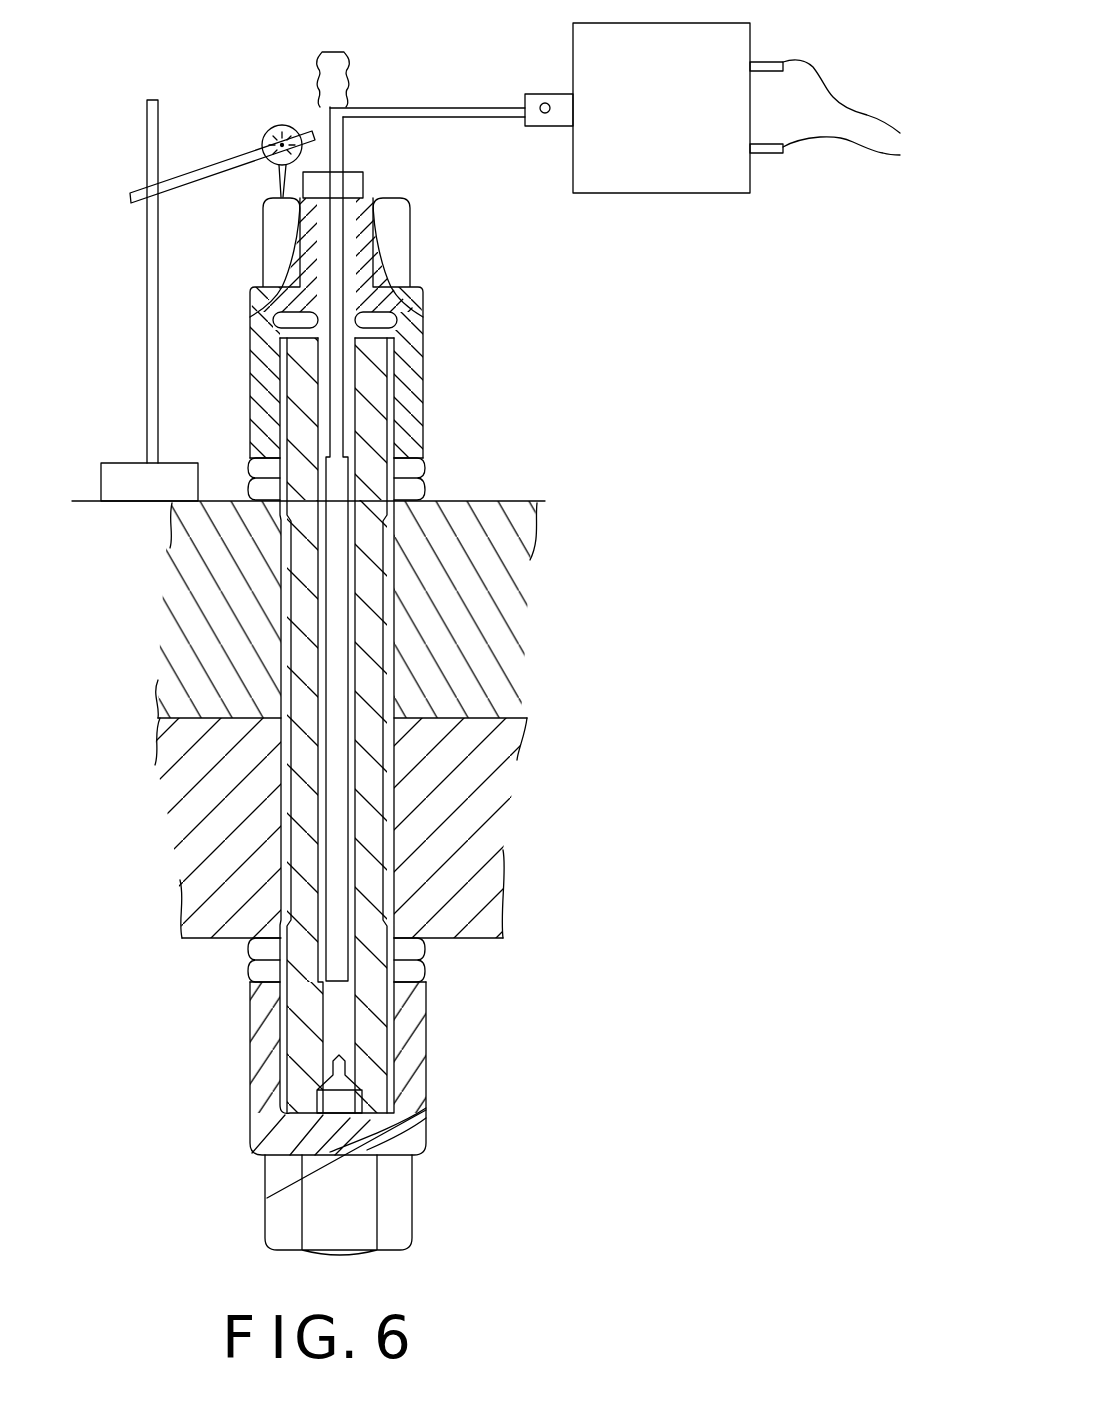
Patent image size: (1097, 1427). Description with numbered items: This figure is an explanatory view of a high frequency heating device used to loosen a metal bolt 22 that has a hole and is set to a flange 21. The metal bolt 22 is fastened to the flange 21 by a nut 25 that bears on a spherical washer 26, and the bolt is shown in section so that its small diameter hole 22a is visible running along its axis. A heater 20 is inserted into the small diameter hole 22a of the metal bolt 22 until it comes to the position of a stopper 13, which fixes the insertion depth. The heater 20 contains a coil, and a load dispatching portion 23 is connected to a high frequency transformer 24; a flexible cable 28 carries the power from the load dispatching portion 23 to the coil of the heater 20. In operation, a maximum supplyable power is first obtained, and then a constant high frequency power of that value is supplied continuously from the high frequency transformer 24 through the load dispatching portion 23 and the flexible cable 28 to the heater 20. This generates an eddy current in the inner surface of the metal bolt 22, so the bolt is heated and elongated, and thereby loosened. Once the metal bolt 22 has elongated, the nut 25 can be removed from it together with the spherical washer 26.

The stopper 13 is at (363, 184).
The heater 20 is at (339, 793).
The flange 21 is at (500, 698).
The metal bolt 22 is at (372, 628).
The small diameter hole 22a is at (355, 845).
The load dispatching portion 23 is at (548, 92).
The high frequency transformer 24 is at (697, 180).
The nut 25 is at (418, 390).
The spherical washer 26 is at (407, 487).
The flexible cable 28 is at (418, 106).